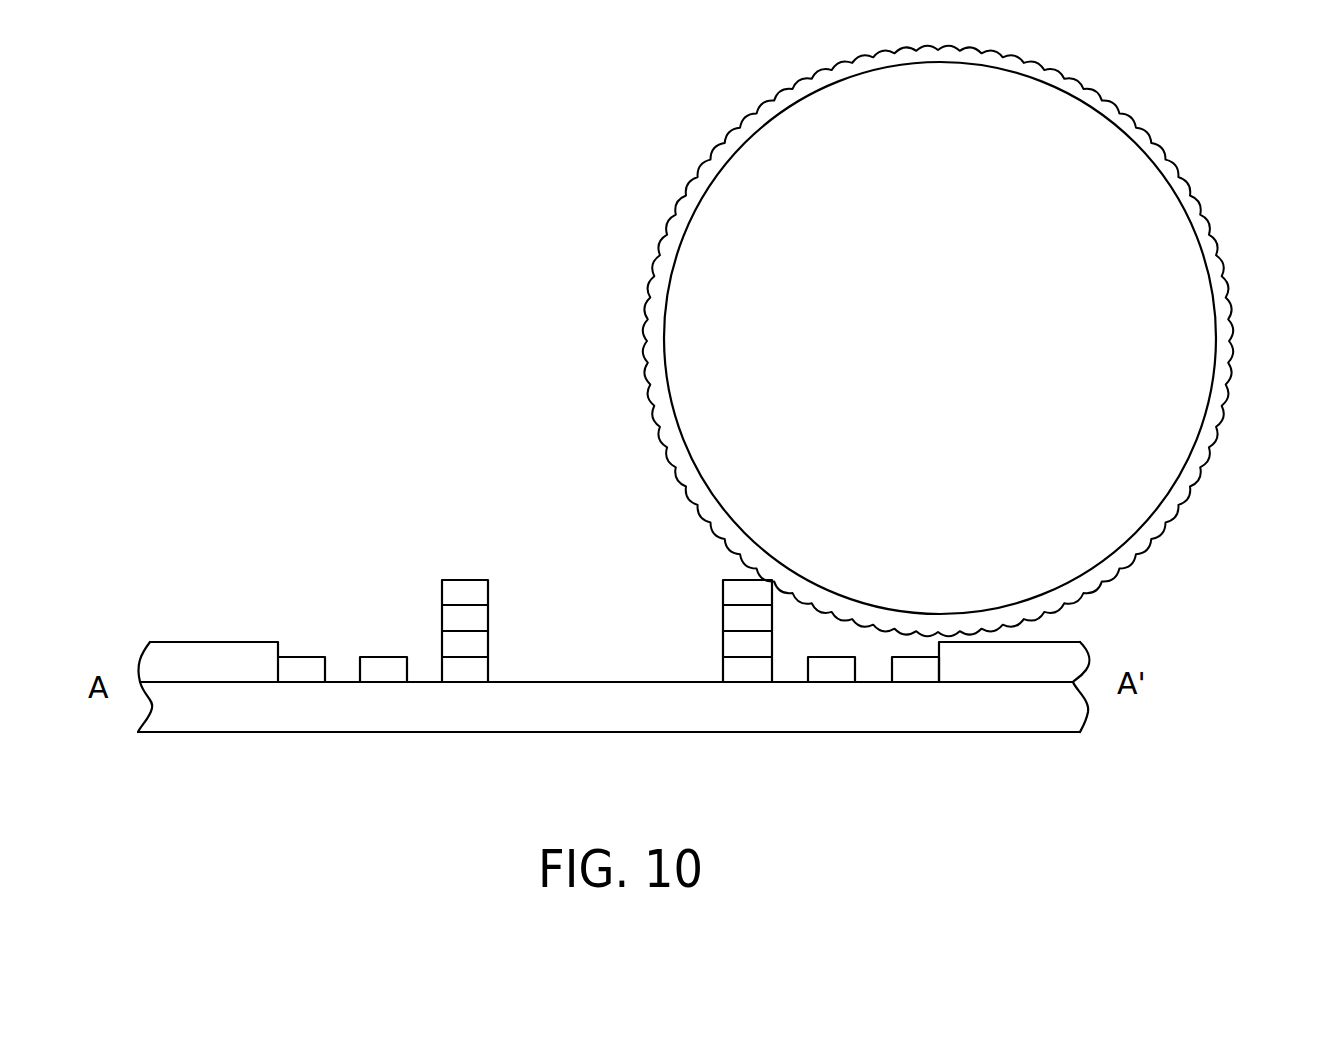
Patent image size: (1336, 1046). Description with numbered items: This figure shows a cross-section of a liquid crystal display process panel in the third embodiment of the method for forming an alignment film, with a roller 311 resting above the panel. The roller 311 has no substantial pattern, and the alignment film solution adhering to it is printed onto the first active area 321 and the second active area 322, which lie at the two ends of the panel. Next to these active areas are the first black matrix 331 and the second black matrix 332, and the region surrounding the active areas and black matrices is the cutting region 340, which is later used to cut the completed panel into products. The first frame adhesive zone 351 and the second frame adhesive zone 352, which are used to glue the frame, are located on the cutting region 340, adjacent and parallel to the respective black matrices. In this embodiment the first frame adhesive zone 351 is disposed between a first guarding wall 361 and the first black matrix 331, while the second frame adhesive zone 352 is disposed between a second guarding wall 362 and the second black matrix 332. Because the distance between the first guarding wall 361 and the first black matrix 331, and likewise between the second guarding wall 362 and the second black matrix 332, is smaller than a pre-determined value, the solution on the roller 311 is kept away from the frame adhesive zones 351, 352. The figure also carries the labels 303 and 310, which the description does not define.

The pixel structure / display panel assembly 303 is at (165, 525).
The spacer 310 is at (963, 371).
The roller 311 is at (1218, 280).
The first active area 321 is at (208, 667).
The second active area 322 is at (1001, 668).
The first black matrix 331 is at (300, 667).
The second black matrix 332 is at (915, 668).
The cutting region 340 is at (609, 682).
The first frame adhesive zone 351 is at (381, 673).
The second frame adhesive zone 352 is at (830, 668).
The first guarding wall 361 is at (432, 593).
The second guarding wall 362 is at (715, 593).